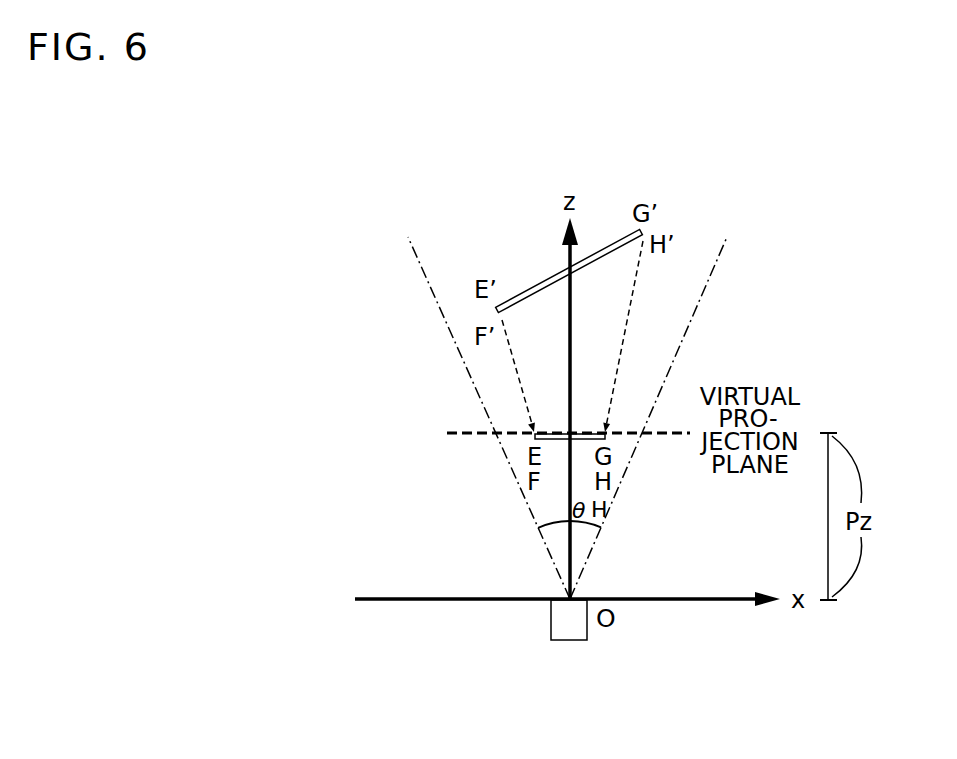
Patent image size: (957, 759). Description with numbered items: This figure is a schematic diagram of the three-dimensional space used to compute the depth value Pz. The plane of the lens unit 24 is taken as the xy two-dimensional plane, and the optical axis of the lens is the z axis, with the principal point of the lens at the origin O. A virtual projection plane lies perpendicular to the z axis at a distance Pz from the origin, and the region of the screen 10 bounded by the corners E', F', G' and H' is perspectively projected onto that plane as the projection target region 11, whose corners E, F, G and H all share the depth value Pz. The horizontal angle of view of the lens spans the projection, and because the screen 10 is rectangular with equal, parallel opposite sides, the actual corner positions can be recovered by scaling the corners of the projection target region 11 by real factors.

The screen 10 is at (608, 240).
The projection target region 11 is at (583, 430).
The lens unit 24 is at (570, 641).